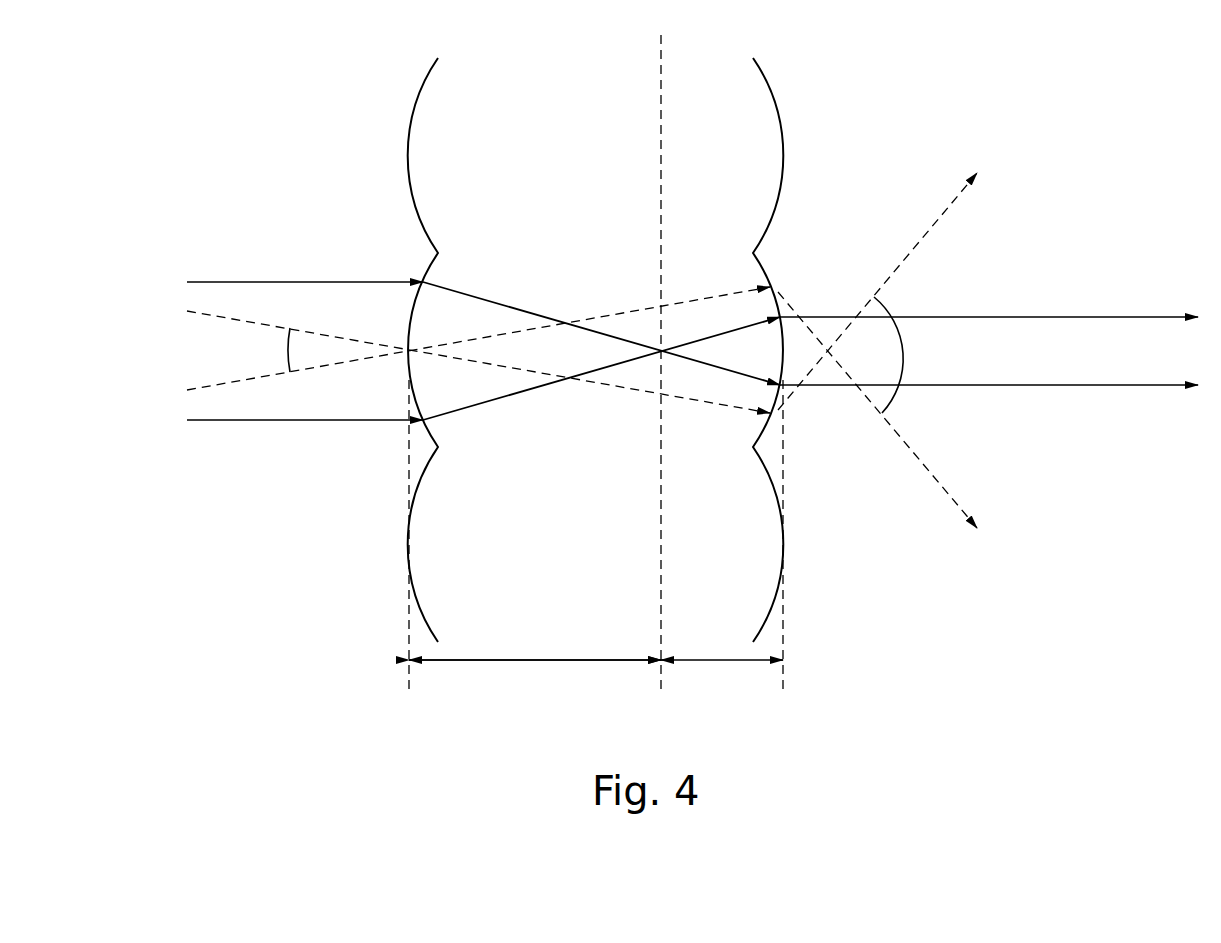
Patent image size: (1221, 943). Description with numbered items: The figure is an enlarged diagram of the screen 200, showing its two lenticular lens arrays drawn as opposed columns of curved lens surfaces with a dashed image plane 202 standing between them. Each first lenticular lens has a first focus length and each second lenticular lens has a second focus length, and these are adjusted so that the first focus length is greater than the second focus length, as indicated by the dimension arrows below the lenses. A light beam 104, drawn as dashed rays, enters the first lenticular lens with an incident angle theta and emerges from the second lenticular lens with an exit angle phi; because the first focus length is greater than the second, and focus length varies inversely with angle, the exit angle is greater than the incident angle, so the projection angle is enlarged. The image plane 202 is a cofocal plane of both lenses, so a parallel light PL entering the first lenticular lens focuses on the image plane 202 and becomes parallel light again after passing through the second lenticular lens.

The screen 200 is at (232, 30).
The image plane 202 is at (658, 122).
The light beam 104 is at (250, 377).
The parallel light PL is at (232, 280).